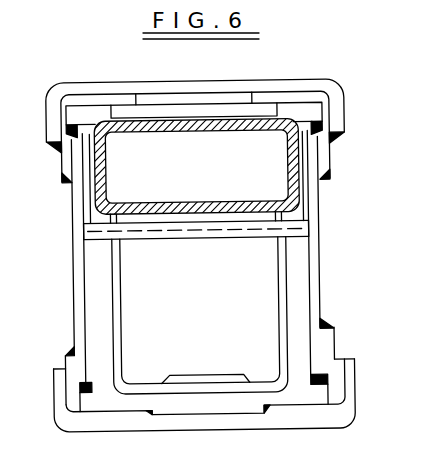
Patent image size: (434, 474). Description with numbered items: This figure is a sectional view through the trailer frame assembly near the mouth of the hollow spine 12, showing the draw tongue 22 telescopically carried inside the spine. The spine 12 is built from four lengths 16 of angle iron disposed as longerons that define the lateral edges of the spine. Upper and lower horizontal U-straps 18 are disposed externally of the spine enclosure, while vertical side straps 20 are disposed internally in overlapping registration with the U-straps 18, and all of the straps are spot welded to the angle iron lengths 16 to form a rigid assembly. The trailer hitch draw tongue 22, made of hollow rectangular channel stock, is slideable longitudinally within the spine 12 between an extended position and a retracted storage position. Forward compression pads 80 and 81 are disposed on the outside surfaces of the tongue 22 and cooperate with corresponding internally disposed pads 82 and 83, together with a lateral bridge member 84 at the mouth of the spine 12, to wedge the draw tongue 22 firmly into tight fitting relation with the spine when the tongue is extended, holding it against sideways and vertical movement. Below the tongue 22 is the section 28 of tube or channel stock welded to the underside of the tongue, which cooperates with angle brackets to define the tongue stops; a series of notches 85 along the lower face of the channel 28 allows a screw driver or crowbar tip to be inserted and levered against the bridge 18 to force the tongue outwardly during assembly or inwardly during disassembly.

The hollow spine 12 is at (85, 76).
The angle iron length 16 is at (330, 110).
The upper horizontal U-strap 18 is at (272, 80).
The vertical side strap 20 is at (78, 300).
The trailer hitch draw tongue 22 is at (185, 138).
The section of tube or channel stock 28 is at (262, 379).
The forward compression pad 80 is at (220, 112).
The forward compression pad 81 is at (302, 184).
The internally disposed pad 82 is at (157, 110).
The internally disposed pad 83 is at (312, 152).
The lateral bridge member 84 is at (168, 238).
The notch 85 is at (200, 376).